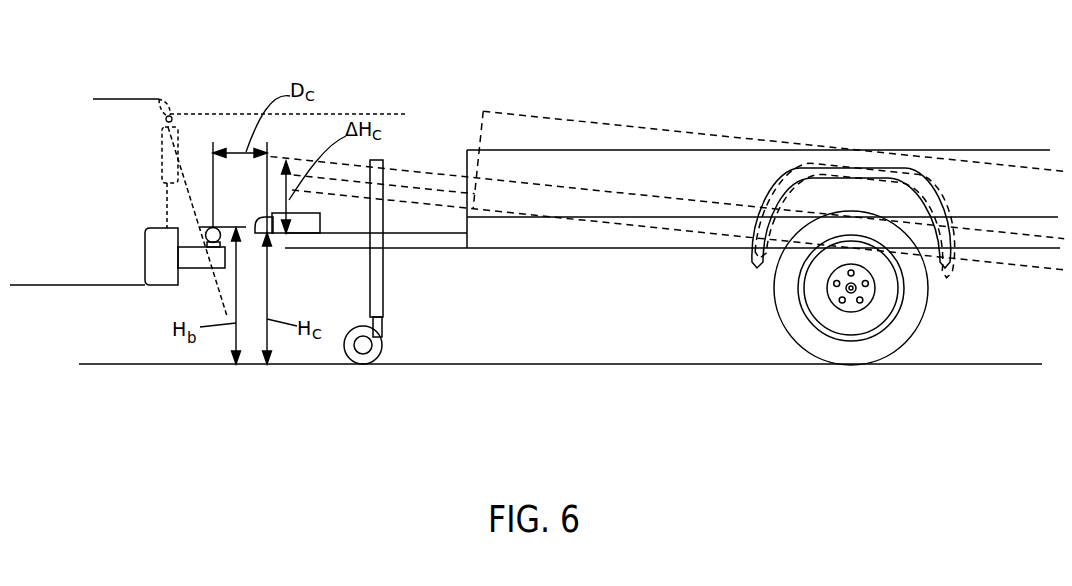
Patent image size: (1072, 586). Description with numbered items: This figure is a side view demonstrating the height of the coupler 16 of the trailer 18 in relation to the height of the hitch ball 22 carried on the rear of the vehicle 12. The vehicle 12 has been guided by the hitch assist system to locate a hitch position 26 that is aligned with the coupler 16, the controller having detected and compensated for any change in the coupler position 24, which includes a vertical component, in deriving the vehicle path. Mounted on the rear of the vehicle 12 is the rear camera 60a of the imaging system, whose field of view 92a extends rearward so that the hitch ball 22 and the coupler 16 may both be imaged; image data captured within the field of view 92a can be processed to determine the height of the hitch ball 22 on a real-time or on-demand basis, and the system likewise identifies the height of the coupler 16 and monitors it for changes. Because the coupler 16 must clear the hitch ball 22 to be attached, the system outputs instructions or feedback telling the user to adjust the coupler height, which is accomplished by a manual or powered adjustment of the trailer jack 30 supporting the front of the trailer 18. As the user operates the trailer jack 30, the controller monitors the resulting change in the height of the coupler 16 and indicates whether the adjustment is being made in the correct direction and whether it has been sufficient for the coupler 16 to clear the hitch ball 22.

The vehicle 12 is at (128, 98).
The rear camera 60a is at (160, 100).
The field of view 92a is at (178, 157).
The hitch ball 22 is at (156, 225).
The hitch position 26 is at (204, 232).
The coupler 16 is at (303, 254).
The coupler position 24 is at (270, 232).
The trailer 18 is at (628, 150).
The trailer jack 30 is at (383, 290).